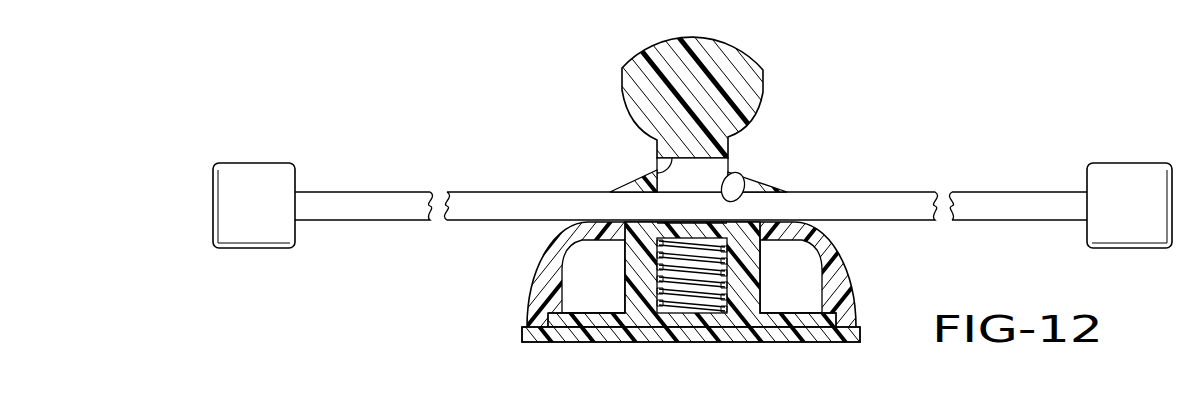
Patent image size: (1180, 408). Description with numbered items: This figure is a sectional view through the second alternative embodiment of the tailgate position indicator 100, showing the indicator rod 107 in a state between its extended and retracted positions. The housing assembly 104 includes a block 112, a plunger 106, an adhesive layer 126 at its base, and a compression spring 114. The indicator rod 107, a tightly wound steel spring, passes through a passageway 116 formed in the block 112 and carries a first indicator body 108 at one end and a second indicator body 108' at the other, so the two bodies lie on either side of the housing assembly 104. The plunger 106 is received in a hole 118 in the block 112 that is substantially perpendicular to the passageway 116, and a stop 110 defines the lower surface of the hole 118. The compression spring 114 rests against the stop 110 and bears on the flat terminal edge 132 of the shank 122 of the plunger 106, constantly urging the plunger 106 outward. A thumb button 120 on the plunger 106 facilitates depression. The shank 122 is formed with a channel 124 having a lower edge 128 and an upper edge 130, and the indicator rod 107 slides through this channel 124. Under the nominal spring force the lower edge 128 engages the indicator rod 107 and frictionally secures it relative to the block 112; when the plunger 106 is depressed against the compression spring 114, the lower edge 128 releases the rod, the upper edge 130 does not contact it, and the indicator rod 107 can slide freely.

The tailgate position indicator 100 is at (497, 122).
The housing assembly 104 is at (523, 308).
The plunger 106 is at (767, 77).
The indicator rod 107 is at (408, 197).
The first indicator body 108 is at (231, 185).
The second indicator body 108' is at (1101, 182).
The stop 110 is at (670, 313).
The block 112 is at (852, 292).
The compression spring 114 is at (698, 297).
The passageway 116 is at (588, 220).
The hole 118 is at (747, 183).
The thumb button 120 is at (633, 70).
The shank 122 is at (730, 150).
The channel 124 is at (697, 172).
The adhesive layer 126 is at (805, 342).
The lower edge 128 is at (650, 173).
The upper edge 130 is at (682, 222).
The terminal edge 132 is at (723, 270).